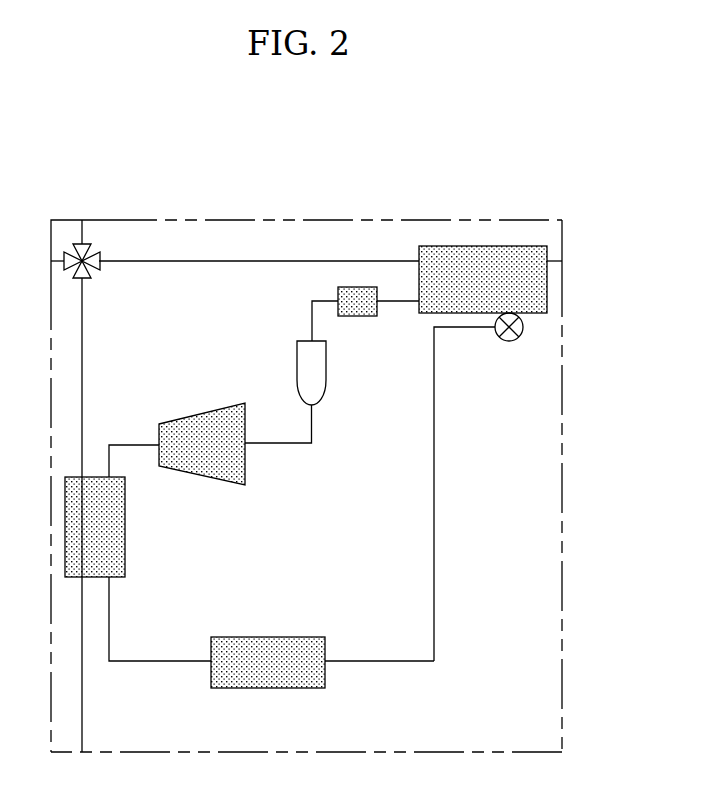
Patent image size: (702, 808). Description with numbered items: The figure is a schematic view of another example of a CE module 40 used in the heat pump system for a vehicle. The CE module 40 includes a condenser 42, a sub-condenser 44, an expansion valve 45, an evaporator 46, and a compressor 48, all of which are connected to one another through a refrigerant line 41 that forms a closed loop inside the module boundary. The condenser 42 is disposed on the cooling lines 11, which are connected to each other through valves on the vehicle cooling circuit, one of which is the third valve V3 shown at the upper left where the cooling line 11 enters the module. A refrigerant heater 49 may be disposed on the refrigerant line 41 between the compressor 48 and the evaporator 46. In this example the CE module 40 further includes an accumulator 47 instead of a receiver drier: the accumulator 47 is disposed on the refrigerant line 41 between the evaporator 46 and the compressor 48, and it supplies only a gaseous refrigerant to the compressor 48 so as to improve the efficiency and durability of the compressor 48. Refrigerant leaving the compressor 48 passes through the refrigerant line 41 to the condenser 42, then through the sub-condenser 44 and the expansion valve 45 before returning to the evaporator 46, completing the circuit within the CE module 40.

The CE module 40 is at (453, 532).
The cooling line 11 is at (223, 262).
The third valve V3 is at (99, 267).
The evaporator 46 is at (478, 246).
The expansion valve 45 is at (509, 341).
The refrigerant heater 49 is at (360, 318).
The accumulator 47 is at (326, 388).
The compressor 48 is at (245, 465).
The refrigerant line 41 is at (128, 445).
The condenser 42 is at (125, 535).
The sub-condenser 44 is at (272, 637).